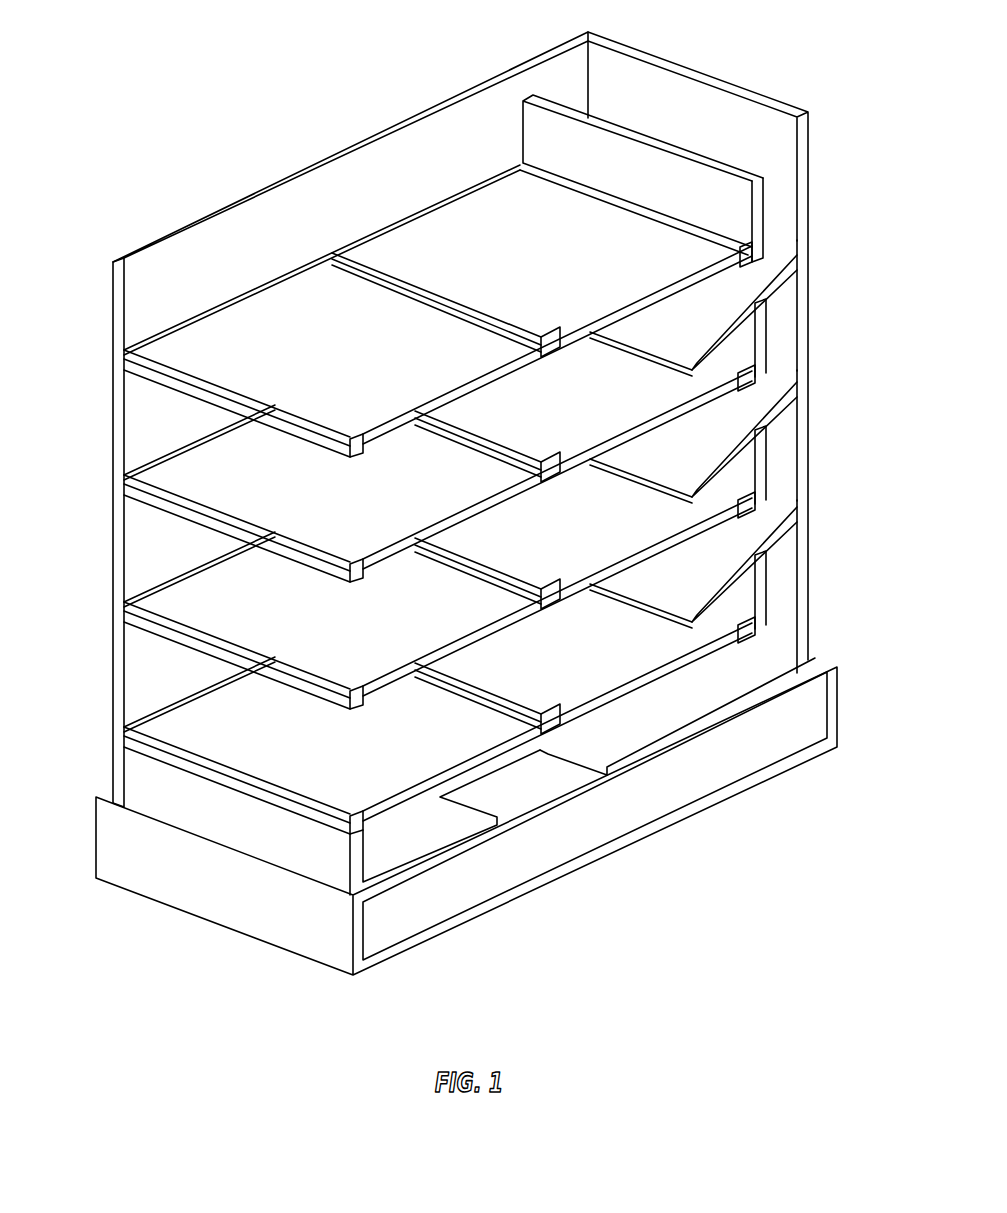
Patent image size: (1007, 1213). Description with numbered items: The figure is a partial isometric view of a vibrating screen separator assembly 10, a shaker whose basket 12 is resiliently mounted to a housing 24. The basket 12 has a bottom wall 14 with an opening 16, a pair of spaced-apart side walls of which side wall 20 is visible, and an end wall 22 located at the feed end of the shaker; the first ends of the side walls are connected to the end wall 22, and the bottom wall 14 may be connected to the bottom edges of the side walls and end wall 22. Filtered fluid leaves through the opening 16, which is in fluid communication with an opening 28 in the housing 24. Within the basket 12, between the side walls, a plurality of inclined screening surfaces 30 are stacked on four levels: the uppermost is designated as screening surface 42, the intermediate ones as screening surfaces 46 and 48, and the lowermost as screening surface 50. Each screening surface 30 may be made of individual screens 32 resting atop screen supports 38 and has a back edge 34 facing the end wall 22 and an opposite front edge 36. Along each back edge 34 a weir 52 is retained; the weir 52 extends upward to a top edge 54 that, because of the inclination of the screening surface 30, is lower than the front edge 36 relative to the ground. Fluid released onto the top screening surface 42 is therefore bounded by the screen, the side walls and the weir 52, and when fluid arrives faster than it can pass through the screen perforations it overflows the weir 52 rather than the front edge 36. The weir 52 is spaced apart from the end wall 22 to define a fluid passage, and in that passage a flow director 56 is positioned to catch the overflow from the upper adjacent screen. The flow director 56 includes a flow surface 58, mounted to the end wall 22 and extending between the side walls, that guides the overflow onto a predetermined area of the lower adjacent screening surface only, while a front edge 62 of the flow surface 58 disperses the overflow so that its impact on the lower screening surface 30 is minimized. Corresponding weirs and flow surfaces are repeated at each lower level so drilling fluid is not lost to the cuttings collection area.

The vibrating screen separator assembly 10 is at (171, 67).
The basket 12 is at (117, 317).
The bottom wall 14 is at (455, 850).
The opening 16 is at (558, 773).
The side wall 20 is at (138, 250).
The end wall 22 is at (751, 95).
The housing 24 is at (113, 850).
The opening 28 is at (410, 910).
The screening surface 30 is at (258, 317).
The screen 32 is at (527, 264).
The back edge 34 is at (591, 156).
The front edge 36 is at (237, 412).
The screen support 38 is at (560, 350).
The top screening surface 42 is at (430, 245).
The second screening surface 46 is at (468, 482).
The third screening surface 48 is at (468, 605).
The lowermost screening surface 50 is at (462, 730).
The weir 52 is at (641, 175).
The top edge 54 is at (633, 130).
The flow director 56 is at (777, 240).
The flow surface 58 is at (672, 329).
The front edge 62 is at (658, 363).